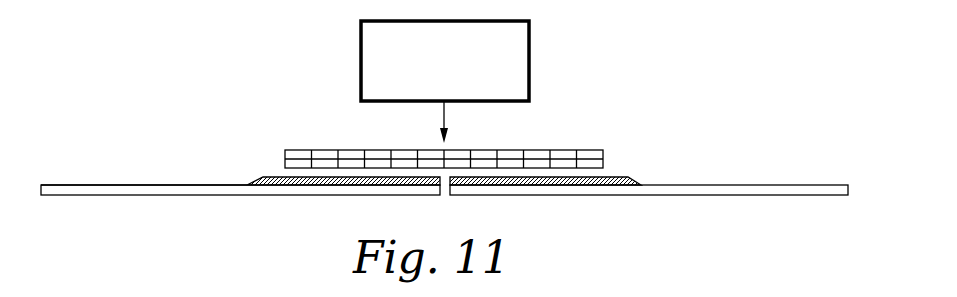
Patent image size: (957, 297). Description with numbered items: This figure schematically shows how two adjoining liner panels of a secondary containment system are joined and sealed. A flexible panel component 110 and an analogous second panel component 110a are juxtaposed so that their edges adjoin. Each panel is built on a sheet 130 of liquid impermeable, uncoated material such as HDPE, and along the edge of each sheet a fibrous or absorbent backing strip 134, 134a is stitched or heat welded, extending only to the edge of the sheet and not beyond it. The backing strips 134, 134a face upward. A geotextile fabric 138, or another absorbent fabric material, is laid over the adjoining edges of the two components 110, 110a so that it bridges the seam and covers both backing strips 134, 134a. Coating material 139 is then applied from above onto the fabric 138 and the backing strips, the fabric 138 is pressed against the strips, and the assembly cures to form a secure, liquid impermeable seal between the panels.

The flexible panel component 110 is at (90, 178).
The second panel component 110a is at (793, 185).
The sheet of liquid impermeable material 130 is at (152, 185).
The backing strip 134 is at (247, 178).
The second backing strip 134a is at (641, 183).
The geotextile fabric 138 is at (592, 149).
The coating material 139 is at (531, 49).